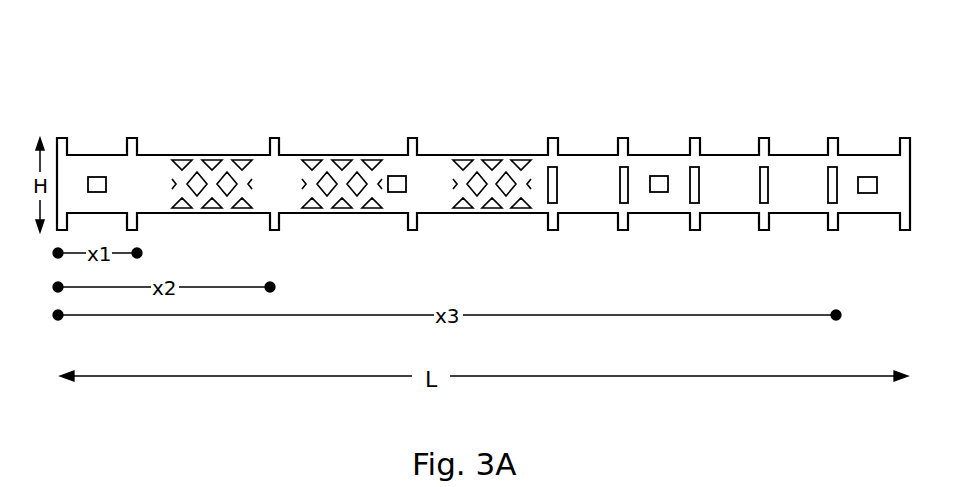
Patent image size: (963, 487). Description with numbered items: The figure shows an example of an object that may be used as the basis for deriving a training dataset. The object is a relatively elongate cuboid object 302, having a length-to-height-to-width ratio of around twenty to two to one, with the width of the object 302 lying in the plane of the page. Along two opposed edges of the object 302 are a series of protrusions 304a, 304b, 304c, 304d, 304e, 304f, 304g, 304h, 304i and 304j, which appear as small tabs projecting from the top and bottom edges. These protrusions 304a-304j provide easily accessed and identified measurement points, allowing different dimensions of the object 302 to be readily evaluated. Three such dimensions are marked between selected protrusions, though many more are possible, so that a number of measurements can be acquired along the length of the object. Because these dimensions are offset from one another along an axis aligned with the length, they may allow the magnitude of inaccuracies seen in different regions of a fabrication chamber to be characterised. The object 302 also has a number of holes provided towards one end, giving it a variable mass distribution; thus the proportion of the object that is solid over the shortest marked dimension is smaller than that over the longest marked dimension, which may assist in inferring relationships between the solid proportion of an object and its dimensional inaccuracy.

The elongate cuboid object 302 is at (94, 87).
The protrusion 304a is at (61, 137).
The protrusion 304b is at (131, 137).
The protrusion 304c is at (273, 137).
The protrusion 304d is at (412, 137).
The protrusion 304e is at (552, 137).
The protrusion 304f is at (654, 110).
The protrusion 304g is at (722, 115).
The protrusion 304h is at (790, 115).
The protrusion 304i is at (831, 137).
The protrusion 304j is at (903, 137).